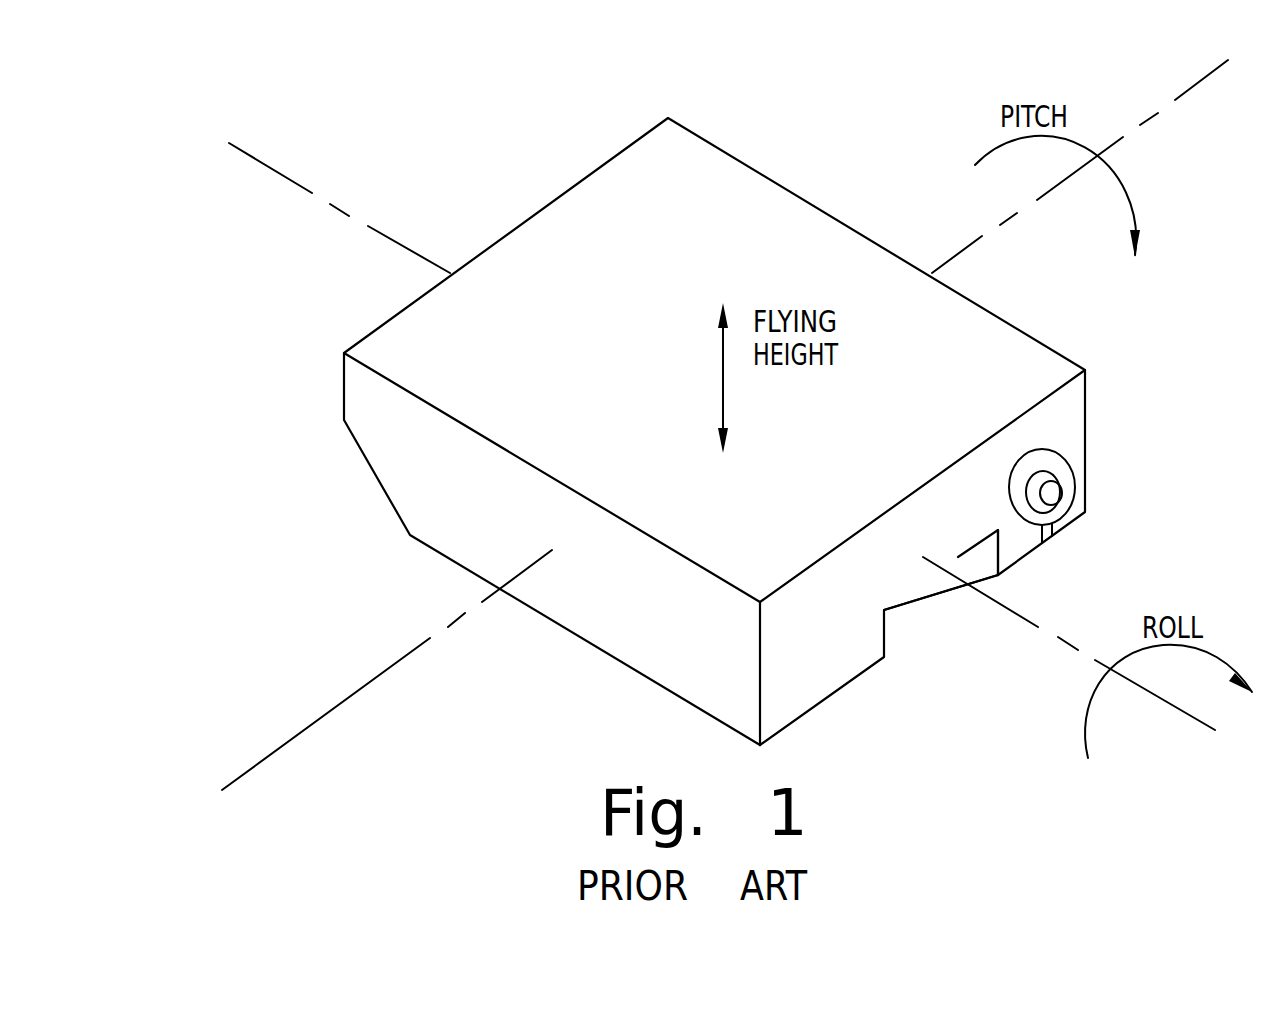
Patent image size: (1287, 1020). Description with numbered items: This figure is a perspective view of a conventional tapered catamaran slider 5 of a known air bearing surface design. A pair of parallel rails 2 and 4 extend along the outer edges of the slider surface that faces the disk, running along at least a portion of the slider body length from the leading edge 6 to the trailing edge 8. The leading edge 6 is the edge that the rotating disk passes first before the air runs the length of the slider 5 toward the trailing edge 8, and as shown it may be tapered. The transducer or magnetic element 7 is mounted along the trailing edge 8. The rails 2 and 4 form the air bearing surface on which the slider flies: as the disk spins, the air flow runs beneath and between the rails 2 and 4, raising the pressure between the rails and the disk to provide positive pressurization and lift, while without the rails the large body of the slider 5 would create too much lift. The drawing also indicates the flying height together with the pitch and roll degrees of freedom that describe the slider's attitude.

The catamaran slider 5 is at (762, 115).
The leading edge 6 is at (344, 387).
The trailing edge 8 is at (1085, 412).
The transducer or magnetic element 7 is at (1075, 478).
The rail 2 is at (1038, 548).
The rail 4 is at (833, 693).